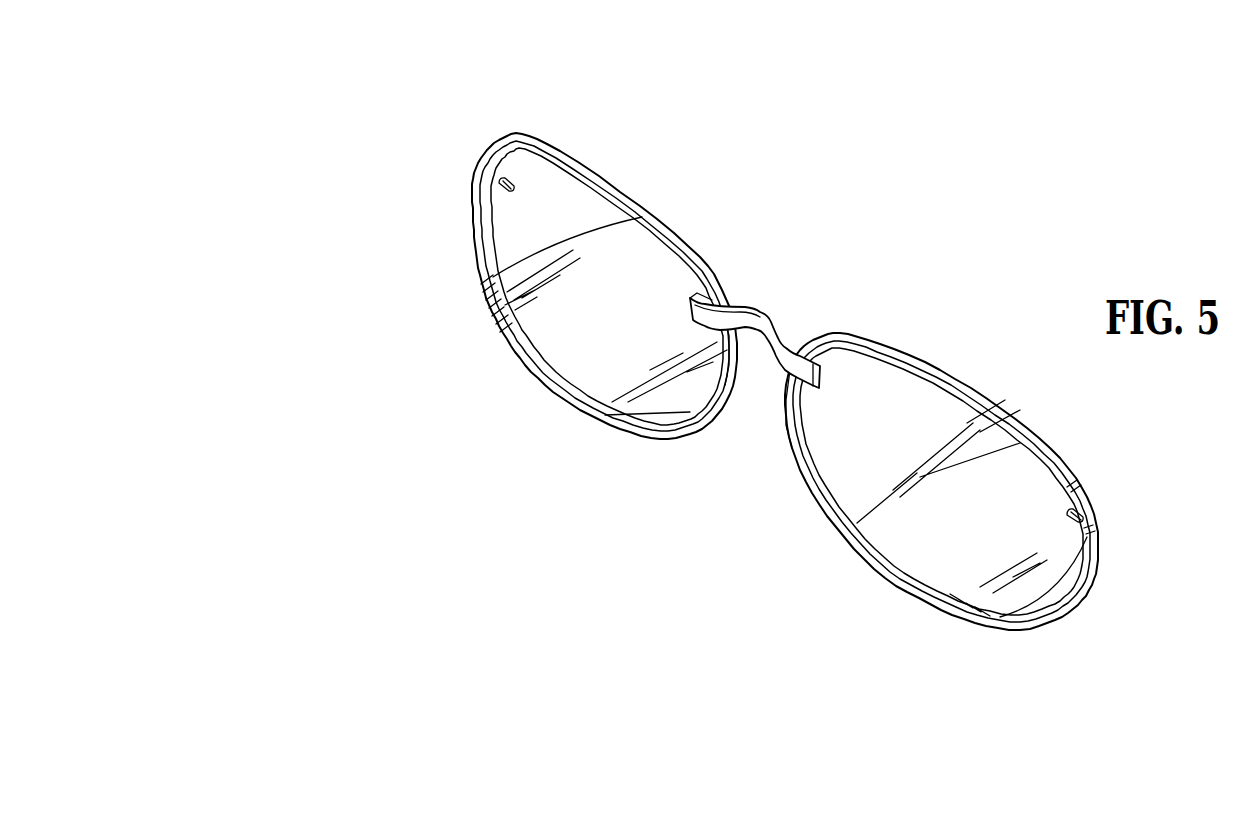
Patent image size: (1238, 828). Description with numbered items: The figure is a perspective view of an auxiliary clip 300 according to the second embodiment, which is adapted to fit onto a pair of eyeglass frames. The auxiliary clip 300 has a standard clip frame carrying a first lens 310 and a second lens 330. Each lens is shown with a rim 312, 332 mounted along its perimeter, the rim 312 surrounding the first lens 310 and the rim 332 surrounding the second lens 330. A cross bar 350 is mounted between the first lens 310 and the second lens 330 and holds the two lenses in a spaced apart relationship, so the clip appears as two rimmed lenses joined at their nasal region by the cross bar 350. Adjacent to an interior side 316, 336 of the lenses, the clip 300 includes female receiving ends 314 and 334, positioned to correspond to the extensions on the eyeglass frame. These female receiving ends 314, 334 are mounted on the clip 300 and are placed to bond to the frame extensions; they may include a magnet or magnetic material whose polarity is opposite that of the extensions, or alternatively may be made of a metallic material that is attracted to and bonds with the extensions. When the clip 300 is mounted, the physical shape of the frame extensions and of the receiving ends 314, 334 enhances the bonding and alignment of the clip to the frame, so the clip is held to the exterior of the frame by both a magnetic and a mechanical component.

The auxiliary clip 300 is at (458, 537).
The first lens 310 is at (578, 347).
The rim 312 is at (623, 196).
The female receiving end 314 is at (518, 186).
The interior side 316 is at (737, 368).
The second lens 330 is at (930, 545).
The rim 332 is at (964, 379).
The female receiving end 334 is at (1095, 510).
The interior side 336 is at (780, 403).
The cross bar 350 is at (753, 308).